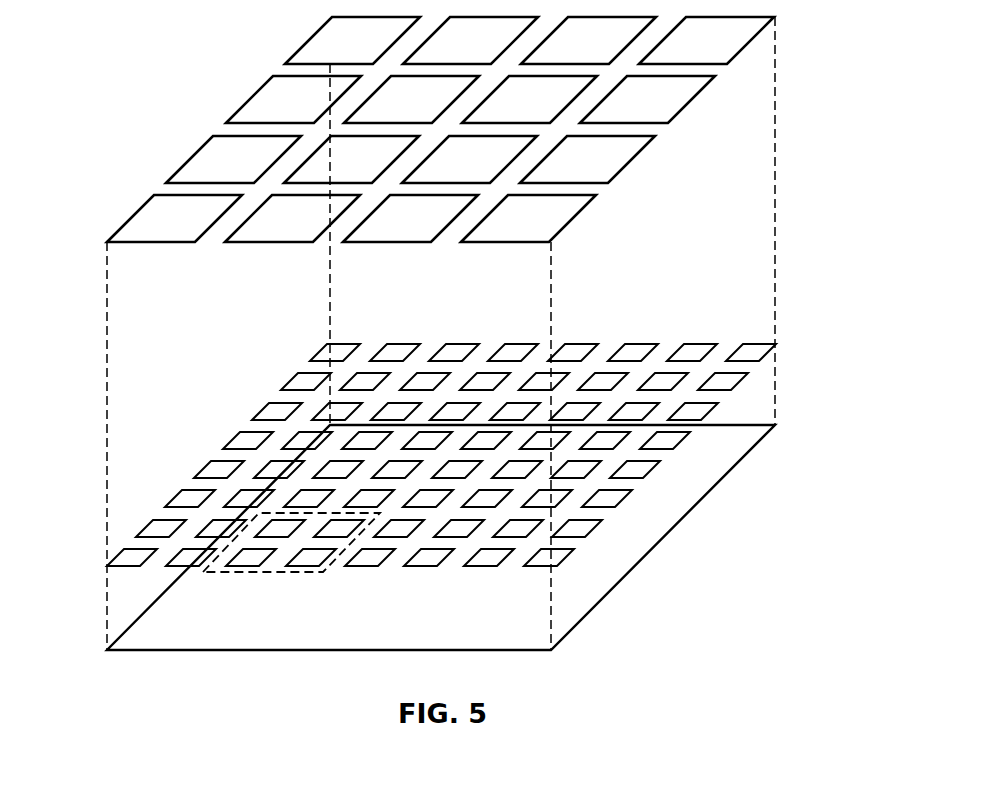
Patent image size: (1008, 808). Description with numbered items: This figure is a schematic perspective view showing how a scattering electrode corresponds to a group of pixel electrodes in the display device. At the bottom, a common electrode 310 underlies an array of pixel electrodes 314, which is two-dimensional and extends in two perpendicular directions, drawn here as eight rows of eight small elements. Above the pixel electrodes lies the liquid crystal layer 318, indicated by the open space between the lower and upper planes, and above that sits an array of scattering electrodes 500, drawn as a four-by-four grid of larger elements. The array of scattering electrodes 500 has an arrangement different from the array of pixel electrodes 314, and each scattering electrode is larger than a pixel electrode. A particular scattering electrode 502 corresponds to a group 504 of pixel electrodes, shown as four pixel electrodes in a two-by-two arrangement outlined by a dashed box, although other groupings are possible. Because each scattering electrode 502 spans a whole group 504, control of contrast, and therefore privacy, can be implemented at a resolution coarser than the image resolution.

The common electrode 310 is at (153, 622).
The array of pixel electrodes 314 is at (748, 385).
The liquid crystal layer 318 is at (692, 287).
The array of scattering electrodes 500 is at (489, 164).
The scattering electrode 502 is at (268, 242).
The group of pixel electrodes 504 is at (282, 572).